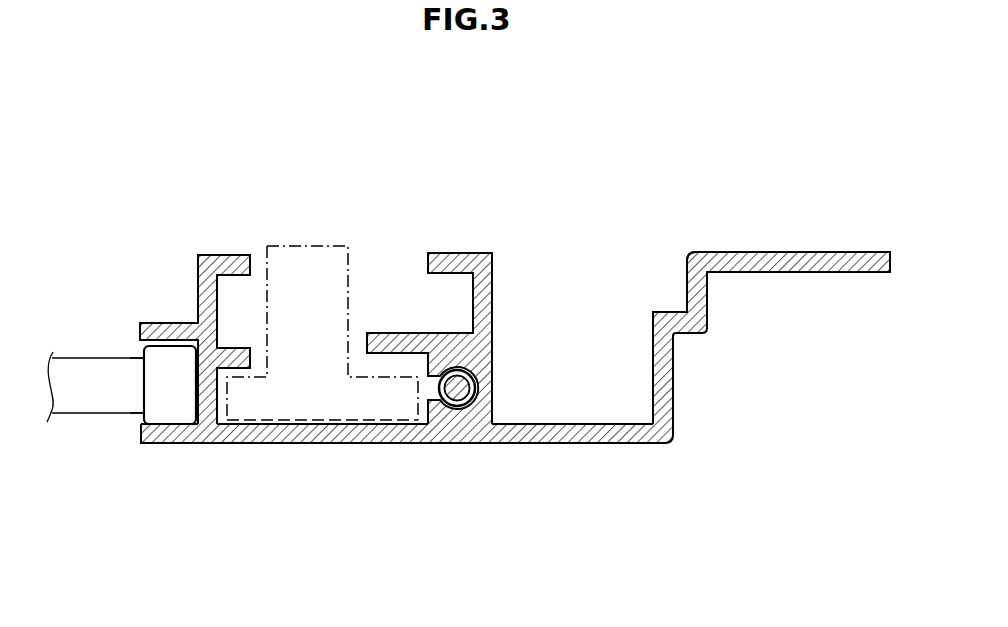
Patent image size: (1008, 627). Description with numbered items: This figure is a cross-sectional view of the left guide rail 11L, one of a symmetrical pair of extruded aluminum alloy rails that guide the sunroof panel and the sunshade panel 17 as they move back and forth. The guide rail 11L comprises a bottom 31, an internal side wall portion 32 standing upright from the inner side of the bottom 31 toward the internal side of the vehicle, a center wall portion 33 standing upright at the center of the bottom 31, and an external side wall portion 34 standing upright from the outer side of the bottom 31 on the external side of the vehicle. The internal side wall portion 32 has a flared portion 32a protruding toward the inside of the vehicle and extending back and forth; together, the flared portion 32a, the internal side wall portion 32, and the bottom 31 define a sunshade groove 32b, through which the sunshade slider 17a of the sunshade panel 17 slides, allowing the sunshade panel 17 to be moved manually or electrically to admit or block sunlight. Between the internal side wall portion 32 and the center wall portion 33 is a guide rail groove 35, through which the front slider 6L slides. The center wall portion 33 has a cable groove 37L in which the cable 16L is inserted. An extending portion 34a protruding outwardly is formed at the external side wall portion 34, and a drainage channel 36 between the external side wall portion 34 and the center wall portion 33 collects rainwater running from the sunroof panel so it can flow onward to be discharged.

The front slider 6L is at (305, 245).
The guide rail 11L is at (487, 207).
The cable 16L is at (466, 382).
The sunshade panel 17 is at (82, 414).
The sunshade slider 17a is at (140, 420).
The bottom 31 is at (370, 444).
The internal side wall portion 32 is at (198, 268).
The flared portion 32a is at (167, 322).
The sunshade groove 32b is at (182, 414).
The center wall portion 33 is at (493, 292).
The external side wall portion 34 is at (676, 363).
The extending portion 34a is at (780, 251).
The guide rail groove 35 is at (313, 423).
The drainage channel 36 is at (596, 422).
The cable groove 37L is at (455, 400).